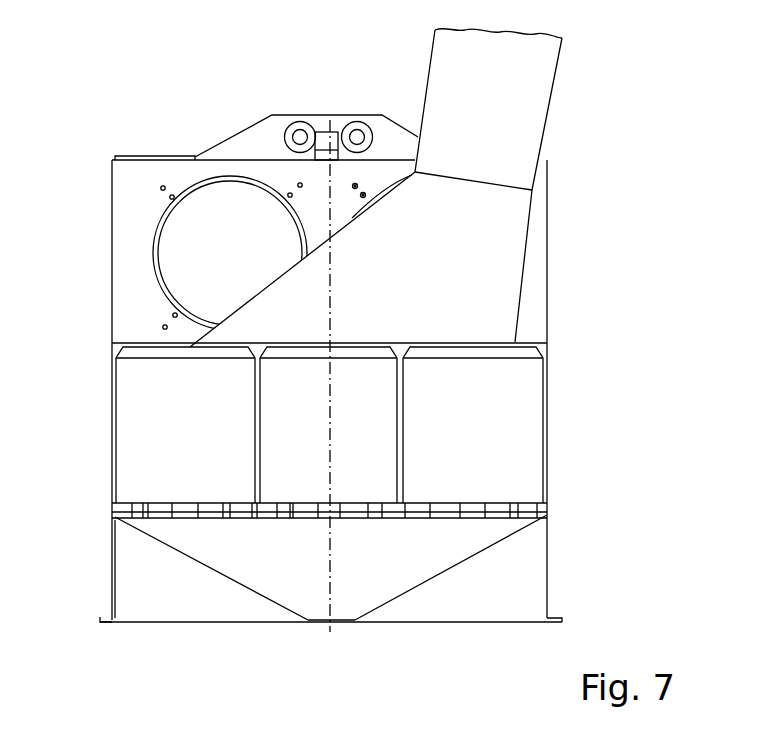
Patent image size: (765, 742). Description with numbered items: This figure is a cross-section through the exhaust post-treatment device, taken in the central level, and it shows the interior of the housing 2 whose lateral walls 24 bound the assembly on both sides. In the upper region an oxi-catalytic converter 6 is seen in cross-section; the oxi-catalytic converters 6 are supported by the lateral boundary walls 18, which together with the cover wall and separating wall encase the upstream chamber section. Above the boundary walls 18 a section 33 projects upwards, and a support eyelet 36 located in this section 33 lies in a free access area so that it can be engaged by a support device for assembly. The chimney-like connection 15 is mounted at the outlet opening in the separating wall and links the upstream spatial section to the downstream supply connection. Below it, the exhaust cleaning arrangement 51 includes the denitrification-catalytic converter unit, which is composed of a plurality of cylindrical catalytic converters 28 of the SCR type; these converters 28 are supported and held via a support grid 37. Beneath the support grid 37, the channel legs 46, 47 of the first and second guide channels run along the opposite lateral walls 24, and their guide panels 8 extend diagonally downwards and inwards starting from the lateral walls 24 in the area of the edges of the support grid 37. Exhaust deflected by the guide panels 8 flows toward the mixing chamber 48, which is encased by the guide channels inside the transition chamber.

The housing 2 is at (547, 298).
The oxi-catalytic converter 6 is at (195, 236).
The guide panel 8 is at (238, 578).
The chimney-like connection 15 is at (423, 260).
The lateral boundary wall 18 is at (133, 177).
The lateral wall 24 is at (112, 548).
The cylindrical catalytic converter 28 is at (169, 428).
The section 33 is at (260, 133).
The support eyelet 36 is at (357, 136).
The support grid 37 is at (548, 503).
The channel leg 46 is at (491, 591).
The channel leg 47 is at (143, 593).
The mixing chamber 48 is at (351, 561).
The exhaust cleaning arrangement 51 is at (580, 234).